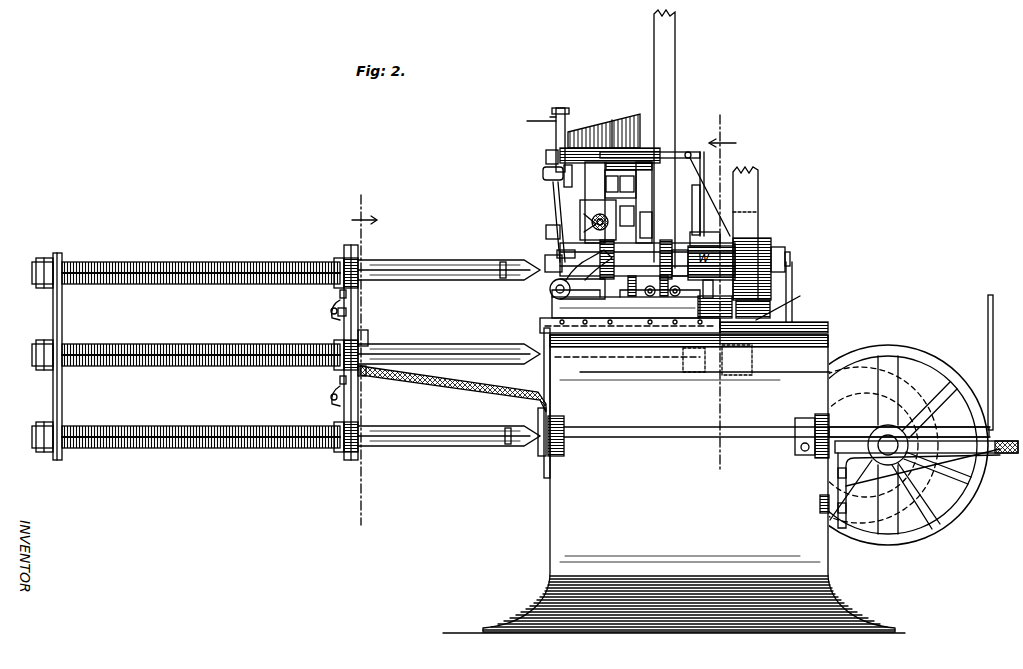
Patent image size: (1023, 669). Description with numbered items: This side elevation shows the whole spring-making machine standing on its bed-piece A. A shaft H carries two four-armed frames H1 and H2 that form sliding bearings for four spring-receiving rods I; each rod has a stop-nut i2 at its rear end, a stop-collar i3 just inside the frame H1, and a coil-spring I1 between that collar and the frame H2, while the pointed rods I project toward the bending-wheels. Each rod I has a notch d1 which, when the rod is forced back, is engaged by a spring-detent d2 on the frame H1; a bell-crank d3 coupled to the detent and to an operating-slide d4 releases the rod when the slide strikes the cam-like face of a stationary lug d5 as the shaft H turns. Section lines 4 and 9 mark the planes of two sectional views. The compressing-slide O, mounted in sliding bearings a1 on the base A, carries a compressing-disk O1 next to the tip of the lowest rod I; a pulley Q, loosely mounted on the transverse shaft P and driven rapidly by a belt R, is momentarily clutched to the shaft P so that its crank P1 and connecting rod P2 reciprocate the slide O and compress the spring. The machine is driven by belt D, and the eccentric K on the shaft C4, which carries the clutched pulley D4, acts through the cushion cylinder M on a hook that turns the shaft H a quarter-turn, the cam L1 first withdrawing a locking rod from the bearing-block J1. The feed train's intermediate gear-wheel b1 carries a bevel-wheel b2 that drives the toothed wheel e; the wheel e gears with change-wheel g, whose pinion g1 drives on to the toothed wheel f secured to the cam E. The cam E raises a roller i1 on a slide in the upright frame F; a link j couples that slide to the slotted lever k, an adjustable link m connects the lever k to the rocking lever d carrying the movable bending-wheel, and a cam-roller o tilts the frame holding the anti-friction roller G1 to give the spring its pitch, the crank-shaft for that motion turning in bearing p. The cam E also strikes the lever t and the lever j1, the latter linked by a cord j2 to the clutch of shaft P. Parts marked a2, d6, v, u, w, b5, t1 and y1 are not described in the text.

The bed-piece A is at (674, 484).
The compressing-slide O is at (640, 427).
The compressing-disk O1 is at (540, 456).
The sliding bearings a1 is at (556, 456).
The shaft bearing a2 is at (805, 455).
The pulley Q is at (908, 352).
The belt R is at (988, 337).
The transversely-arranged shaft P is at (862, 470).
The crank P1 is at (940, 440).
The connecting rod P2 is at (840, 430).
The shaft H is at (544, 336).
The four-armed frame H1 is at (358, 312).
The four-armed frame H2 is at (62, 392).
The spring-receiving rods I is at (424, 255).
The coil-spring I1 is at (156, 262).
The roller i1 is at (565, 115).
The stop-nut i2 is at (32, 282).
The stop-collar i3 is at (336, 258).
The rocking lever d is at (550, 289).
The notch d1 is at (500, 282).
The spring-detent d2 is at (330, 330).
The bell-crank d3 is at (338, 312).
The operating-slide d4 is at (453, 389).
The stationary lug d5 is at (368, 336).
The block d6 is at (366, 378).
The belt D is at (670, 139).
The pulley D4 is at (758, 222).
The eccentric K is at (733, 252).
The shaft C4 is at (792, 252).
The cylinder M is at (726, 312).
The cam L1 is at (706, 318).
The fixed bearing-block J1 is at (768, 318).
The wire or cord j2 is at (783, 292).
The cylinder v is at (647, 259).
The block u is at (545, 260).
The plate w is at (560, 250).
The toothed wheel e is at (611, 184).
The change-wheel g is at (634, 170).
The pinion g1 is at (626, 184).
The cam-roller o is at (596, 230).
The intermediate gear-wheel b1 is at (652, 226).
The bevel-wheel b2 is at (622, 214).
The arm b5 is at (586, 227).
The cam E is at (604, 131).
The toothed wheel f is at (619, 134).
The upright frame F is at (541, 113).
The link j is at (546, 157).
The slotted lever k is at (543, 173).
The bearing p is at (564, 182).
The adjustable link m is at (556, 200).
The anti-friction roller G1 is at (546, 232).
The lever t is at (650, 152).
The lever j1 is at (688, 152).
The link t1 is at (700, 178).
The post y1 is at (692, 200).
The section line 4 is at (364, 359).
The section line 9 is at (722, 288).